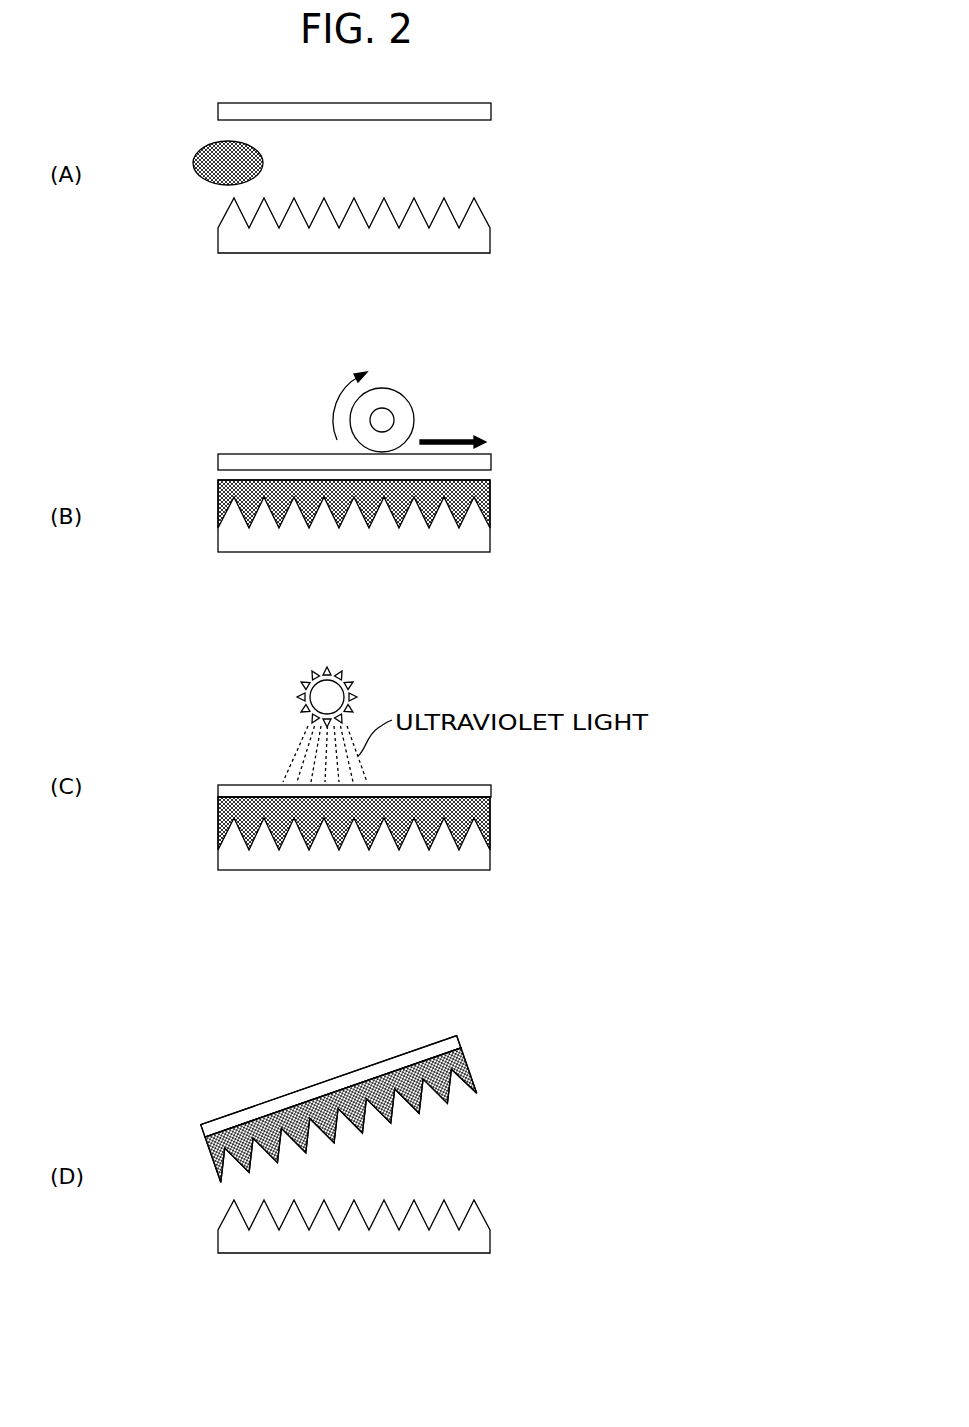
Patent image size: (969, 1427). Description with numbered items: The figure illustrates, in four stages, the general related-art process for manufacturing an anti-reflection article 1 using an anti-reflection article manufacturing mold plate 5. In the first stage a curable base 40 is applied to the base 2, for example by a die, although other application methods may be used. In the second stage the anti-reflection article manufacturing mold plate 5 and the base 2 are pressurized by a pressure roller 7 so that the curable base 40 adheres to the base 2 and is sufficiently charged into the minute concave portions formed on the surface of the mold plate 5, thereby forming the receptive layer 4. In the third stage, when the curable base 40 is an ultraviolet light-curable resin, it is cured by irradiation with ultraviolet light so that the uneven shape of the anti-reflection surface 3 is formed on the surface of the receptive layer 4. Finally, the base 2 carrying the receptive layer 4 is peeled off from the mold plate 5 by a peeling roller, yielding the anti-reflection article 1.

The anti-reflection article 1 is at (230, 1100).
The base 2 is at (489, 109).
The anti-reflection surface 3 is at (247, 834).
The receptive layer 4 is at (480, 503).
The anti-reflection article manufacturing mold plate 5 is at (487, 240).
The pressure roller 7 is at (399, 410).
The curable base 40 is at (214, 152).